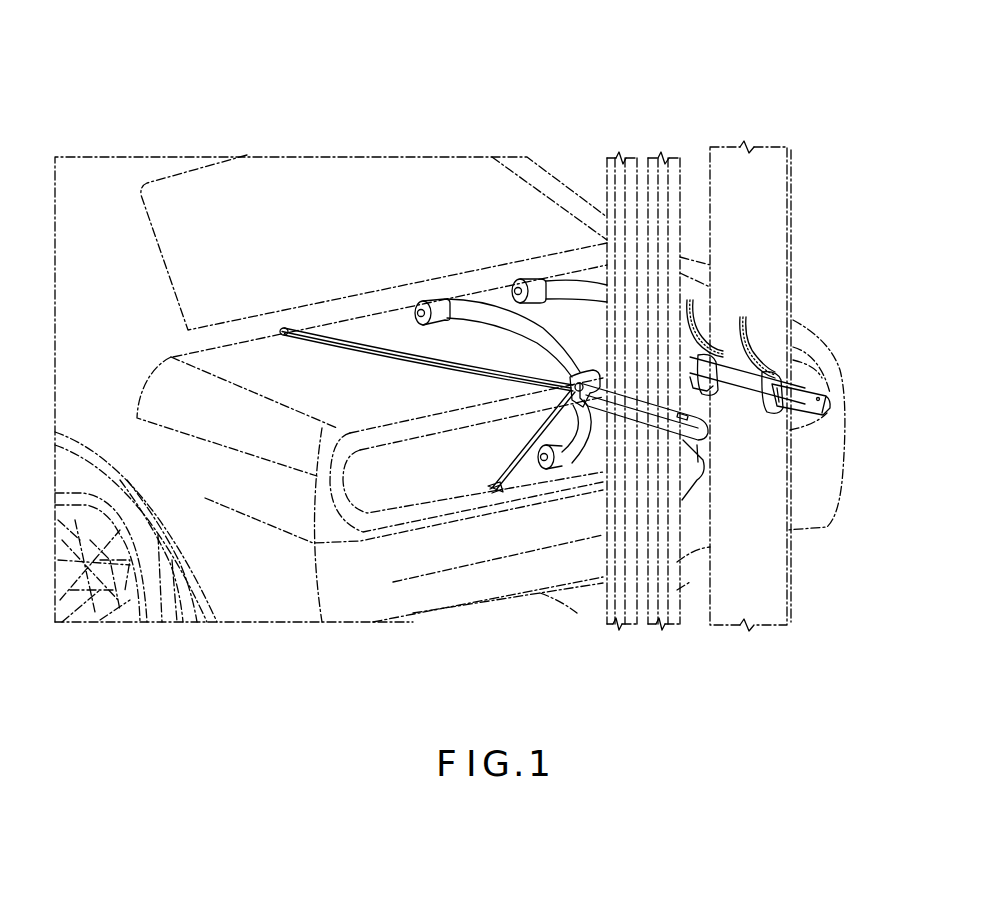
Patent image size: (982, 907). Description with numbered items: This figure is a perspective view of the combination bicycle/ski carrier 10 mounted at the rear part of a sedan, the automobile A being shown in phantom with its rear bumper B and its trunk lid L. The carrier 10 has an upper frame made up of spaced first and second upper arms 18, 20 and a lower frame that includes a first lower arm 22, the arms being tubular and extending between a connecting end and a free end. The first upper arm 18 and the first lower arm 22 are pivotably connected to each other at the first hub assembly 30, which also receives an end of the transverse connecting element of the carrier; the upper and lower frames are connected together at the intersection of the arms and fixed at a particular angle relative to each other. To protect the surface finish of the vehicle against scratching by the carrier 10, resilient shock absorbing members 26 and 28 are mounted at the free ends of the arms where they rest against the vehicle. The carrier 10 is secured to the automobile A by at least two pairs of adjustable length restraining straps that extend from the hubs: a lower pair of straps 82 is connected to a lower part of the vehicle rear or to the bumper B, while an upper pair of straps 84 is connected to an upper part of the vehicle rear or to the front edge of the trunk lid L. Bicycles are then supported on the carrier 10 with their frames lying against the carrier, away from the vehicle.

The combination bicycle/ski carrier 10 is at (820, 298).
The first upper arm 18 is at (483, 299).
The second upper arm 20 is at (568, 281).
The first lower arm 22 is at (583, 447).
The resilient shock absorbing member 26 is at (432, 300).
The resilient shock absorbing member 28 is at (524, 280).
The first hub assembly 30 is at (565, 380).
The lower pair of straps 82 is at (522, 462).
The upper pair of straps 84 is at (418, 363).
The automobile A is at (352, 118).
The rear bumper B is at (372, 567).
The trunk lid L is at (320, 398).